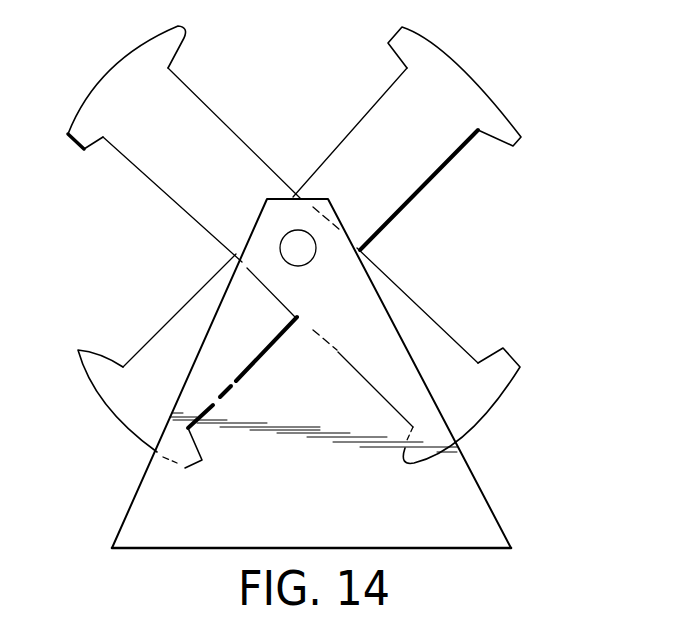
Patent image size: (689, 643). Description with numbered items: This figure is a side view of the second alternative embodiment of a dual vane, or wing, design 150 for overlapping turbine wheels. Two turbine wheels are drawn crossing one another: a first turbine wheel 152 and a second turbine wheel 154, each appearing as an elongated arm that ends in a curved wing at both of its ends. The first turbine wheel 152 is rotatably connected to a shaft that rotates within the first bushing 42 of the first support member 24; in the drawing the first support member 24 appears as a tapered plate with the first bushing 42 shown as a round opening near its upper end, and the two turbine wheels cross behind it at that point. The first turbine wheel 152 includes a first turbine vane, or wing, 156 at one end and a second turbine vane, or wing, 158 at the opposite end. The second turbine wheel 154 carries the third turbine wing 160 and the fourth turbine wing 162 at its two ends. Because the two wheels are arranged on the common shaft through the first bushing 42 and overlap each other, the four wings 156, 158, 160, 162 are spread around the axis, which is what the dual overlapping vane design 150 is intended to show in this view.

The first support member 24 is at (315, 512).
The first bushing 42 is at (290, 230).
The second alternative embodiment with dual vane design 150 is at (295, 247).
The first turbine wheel 152 is at (208, 175).
The second turbine wheel 154 is at (422, 173).
The first turbine vane 156 is at (157, 108).
The second turbine vane 158 is at (485, 398).
The third turbine wing 160 is at (165, 407).
The fourth turbine wing 162 is at (470, 103).